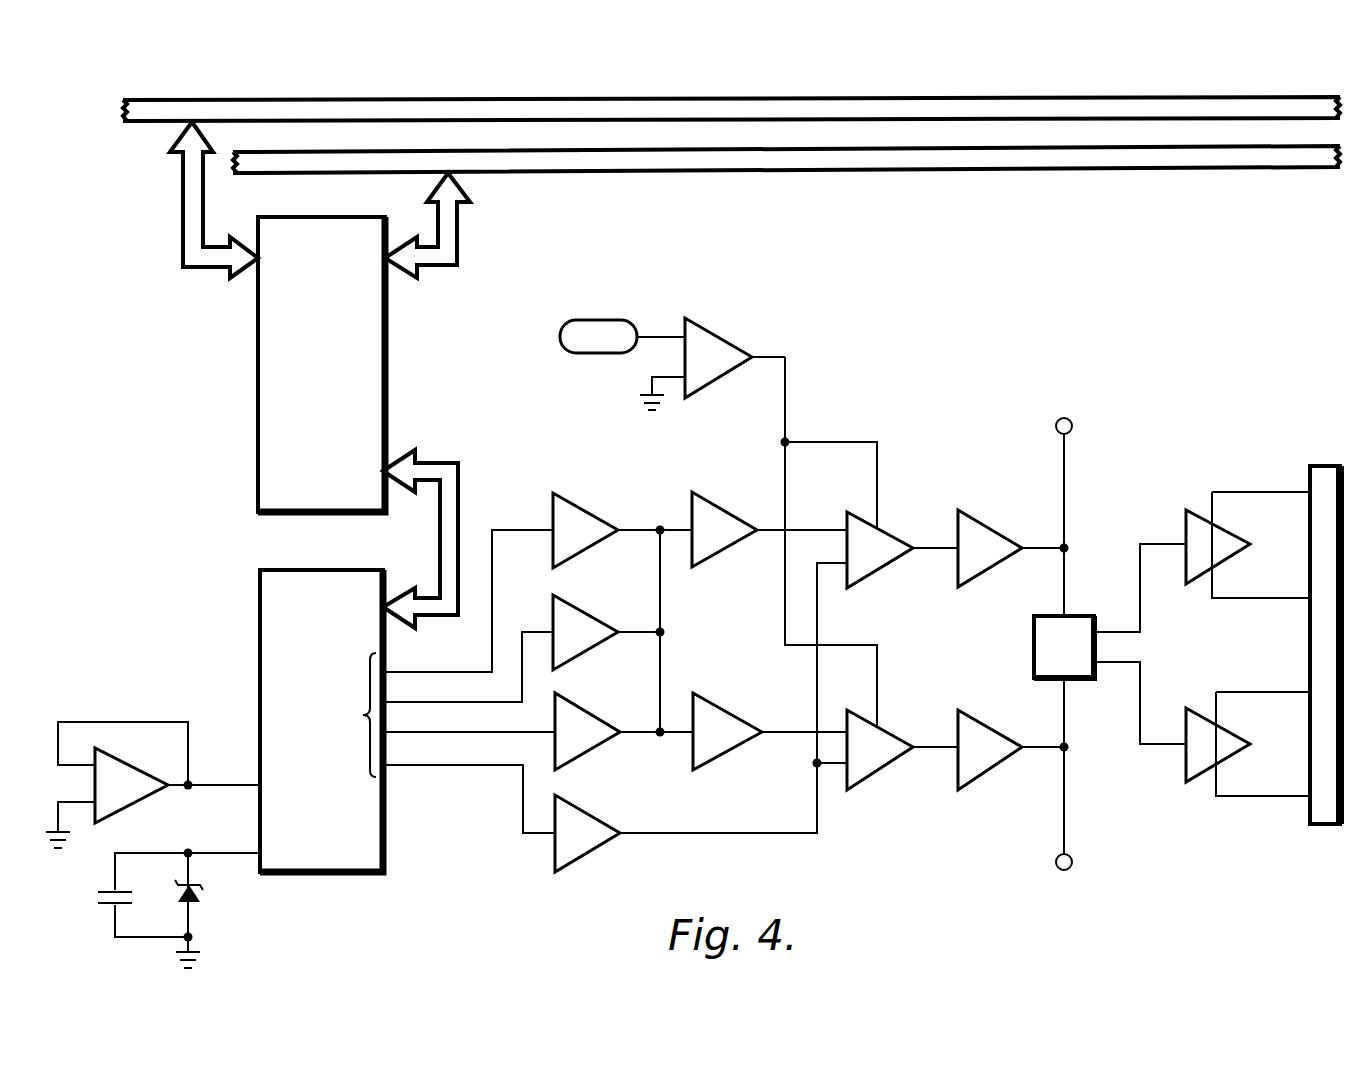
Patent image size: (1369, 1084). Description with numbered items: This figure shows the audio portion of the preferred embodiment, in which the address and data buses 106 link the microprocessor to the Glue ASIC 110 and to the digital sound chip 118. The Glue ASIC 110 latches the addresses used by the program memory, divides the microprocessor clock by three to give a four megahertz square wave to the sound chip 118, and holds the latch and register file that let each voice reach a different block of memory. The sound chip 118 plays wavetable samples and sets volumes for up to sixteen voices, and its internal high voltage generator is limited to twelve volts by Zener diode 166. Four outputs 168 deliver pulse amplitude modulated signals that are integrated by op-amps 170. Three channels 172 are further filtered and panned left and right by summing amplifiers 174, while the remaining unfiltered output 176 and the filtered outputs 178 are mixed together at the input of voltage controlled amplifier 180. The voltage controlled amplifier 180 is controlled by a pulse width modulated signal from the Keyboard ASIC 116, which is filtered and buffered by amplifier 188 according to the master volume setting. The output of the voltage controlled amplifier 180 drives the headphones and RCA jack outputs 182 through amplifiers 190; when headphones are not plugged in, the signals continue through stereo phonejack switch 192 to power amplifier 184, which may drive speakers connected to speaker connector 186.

The address and data buses 106 is at (148, 128).
The Glue ASIC 110 is at (343, 271).
The Keyboard ASIC 116 is at (598, 318).
The digital sound chip 118 is at (348, 618).
The Zener diode 166 is at (211, 903).
The outputs 168 is at (140, 798).
The op-amps 170 is at (598, 543).
The channels 172 is at (638, 527).
The summing amplifiers 174 is at (737, 543).
The unfiltered output 176 is at (676, 833).
The filtered outputs 178 is at (773, 527).
The voltage controlled amplifier 180 is at (892, 561).
The headphones and RCA jack outputs 182 is at (1064, 416).
The power amplifier 184 is at (1231, 557).
The speaker connector 186 is at (1322, 466).
The amplifier 188 is at (730, 370).
The amplifiers 190 is at (1003, 561).
The stereo phonejack switch 192 is at (1084, 659).